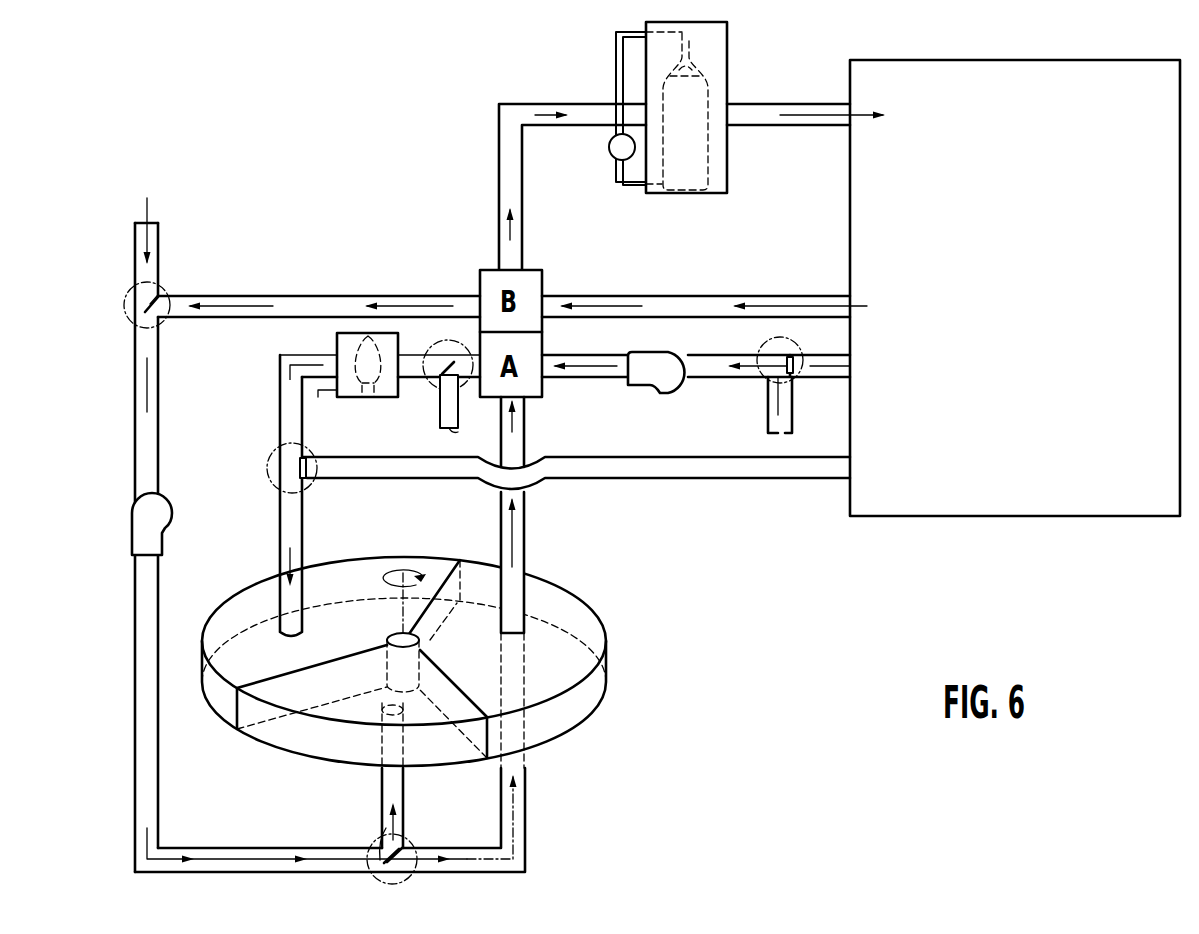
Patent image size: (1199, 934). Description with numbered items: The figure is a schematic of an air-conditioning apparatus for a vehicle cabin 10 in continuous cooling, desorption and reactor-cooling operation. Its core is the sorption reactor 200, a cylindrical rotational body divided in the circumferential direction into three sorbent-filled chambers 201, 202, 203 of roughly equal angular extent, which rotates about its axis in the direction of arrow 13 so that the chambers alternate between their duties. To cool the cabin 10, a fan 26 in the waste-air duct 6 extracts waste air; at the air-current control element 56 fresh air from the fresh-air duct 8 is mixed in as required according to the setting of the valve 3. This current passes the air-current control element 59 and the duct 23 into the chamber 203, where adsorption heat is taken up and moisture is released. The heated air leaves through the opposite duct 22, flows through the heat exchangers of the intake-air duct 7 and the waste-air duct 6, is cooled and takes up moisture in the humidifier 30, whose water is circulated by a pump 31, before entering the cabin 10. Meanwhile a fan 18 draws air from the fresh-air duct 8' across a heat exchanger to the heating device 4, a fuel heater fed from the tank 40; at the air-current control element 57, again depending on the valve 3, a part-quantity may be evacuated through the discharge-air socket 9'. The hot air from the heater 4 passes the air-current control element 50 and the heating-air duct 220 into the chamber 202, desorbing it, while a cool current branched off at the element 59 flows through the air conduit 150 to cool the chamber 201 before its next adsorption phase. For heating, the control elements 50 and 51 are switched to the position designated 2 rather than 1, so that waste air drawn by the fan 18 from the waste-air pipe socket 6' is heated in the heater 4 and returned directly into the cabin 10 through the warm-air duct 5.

The cabin 10 is at (1016, 305).
The humidifier 30 is at (719, 44).
The pump 31 is at (609, 152).
The intake-air duct 7 is at (801, 104).
The waste-air duct 6 is at (501, 547).
The fresh-air duct 8 is at (167, 231).
The valve 3 is at (135, 290).
The air-current control element 56 is at (170, 322).
The heating device 4 is at (338, 352).
The tank 40 is at (318, 397).
The air-current control element 57 is at (433, 387).
The position designated 2 is at (512, 418).
The position designated 1 is at (554, 402).
The discharge-air duct (waste-air pipe socket) 9' is at (461, 440).
The fan 18 is at (667, 388).
The air-current control element 51 is at (757, 338).
The fresh-air duct 8' is at (760, 416).
The waste-air pipe socket 6' is at (830, 394).
The warm-air duct 5 is at (802, 479).
The air-current control element 50 is at (268, 460).
The heating-air duct 220 is at (303, 518).
The fan 26 is at (167, 522).
The sorption reactor 200 is at (484, 656).
The chamber 201 is at (357, 702).
The chamber 202 is at (338, 612).
The chamber 203 is at (547, 652).
The arrow 13 is at (409, 586).
The duct 22 is at (525, 534).
The duct 23 is at (525, 815).
The air conduit 150 is at (403, 795).
The air-current control element 59 is at (377, 843).